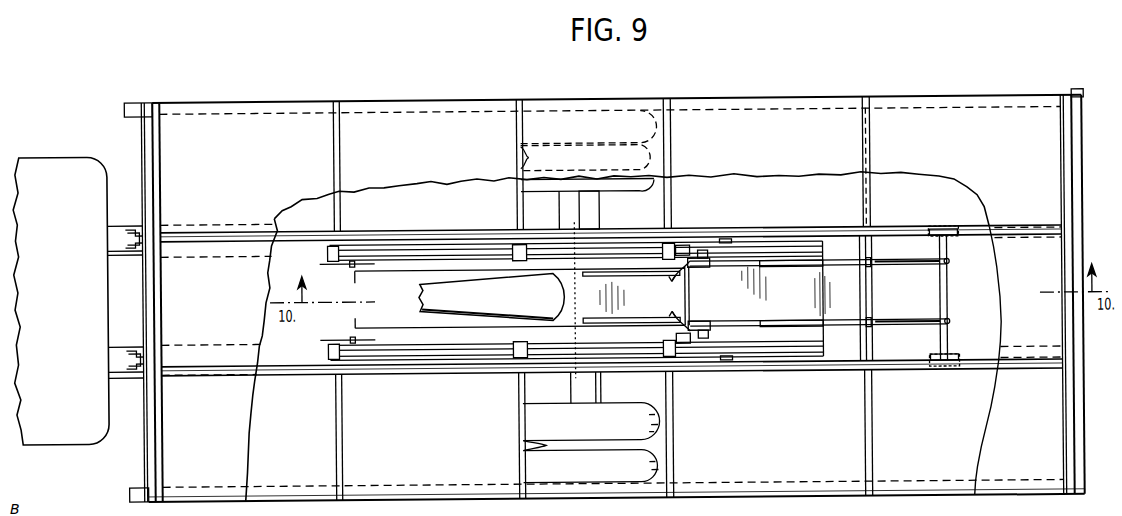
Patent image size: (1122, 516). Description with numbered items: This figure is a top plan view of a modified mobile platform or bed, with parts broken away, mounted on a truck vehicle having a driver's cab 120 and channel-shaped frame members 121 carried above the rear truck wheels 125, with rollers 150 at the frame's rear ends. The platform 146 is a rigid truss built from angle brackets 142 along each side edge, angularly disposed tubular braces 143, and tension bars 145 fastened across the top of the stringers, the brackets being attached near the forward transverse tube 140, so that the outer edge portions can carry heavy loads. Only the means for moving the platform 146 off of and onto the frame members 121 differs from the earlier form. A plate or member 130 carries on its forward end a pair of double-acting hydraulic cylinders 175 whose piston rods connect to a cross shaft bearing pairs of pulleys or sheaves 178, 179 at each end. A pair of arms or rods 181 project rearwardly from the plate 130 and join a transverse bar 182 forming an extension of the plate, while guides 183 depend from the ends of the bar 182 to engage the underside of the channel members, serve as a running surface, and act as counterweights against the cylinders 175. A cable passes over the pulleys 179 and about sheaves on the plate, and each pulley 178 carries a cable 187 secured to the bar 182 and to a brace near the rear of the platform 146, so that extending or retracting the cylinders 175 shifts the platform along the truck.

The driver's cab 120 is at (48, 154).
The frame member 121 is at (119, 221).
The rear truck wheels 125 is at (510, 418).
The plate or member 130 is at (801, 307).
The transversely extending tube 140 is at (158, 187).
The angle bracket 142 is at (697, 490).
The tubular brace 143 is at (674, 208).
The tension bar 145 is at (862, 170).
The platform 146 is at (937, 171).
The roller 150 is at (122, 376).
The double-acting hydraulic cylinder 175 is at (372, 258).
The pulley or sheave 178 is at (718, 320).
The pulley or sheave 179 is at (708, 257).
The arm or rod 181 is at (893, 270).
The transverse bar 182 is at (947, 299).
The guide 183 is at (945, 350).
The cable 187 is at (833, 322).